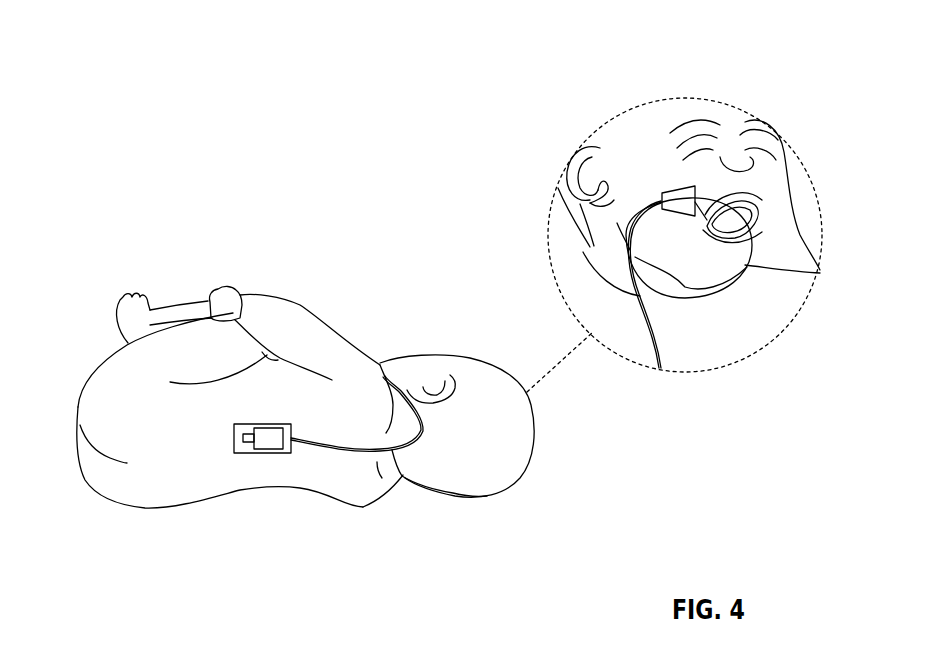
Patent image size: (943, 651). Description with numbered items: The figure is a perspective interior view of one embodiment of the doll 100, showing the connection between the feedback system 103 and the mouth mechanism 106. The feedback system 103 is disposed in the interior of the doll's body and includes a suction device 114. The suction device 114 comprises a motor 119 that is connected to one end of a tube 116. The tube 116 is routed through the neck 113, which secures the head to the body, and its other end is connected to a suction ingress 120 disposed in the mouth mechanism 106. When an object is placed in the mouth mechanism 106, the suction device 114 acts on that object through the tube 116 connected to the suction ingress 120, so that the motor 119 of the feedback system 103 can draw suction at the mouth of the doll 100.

The doll 100 is at (68, 373).
The feedback system 103 is at (276, 491).
The mouth mechanism 106 is at (818, 276).
The neck 113 is at (380, 474).
The suction device 114 is at (303, 493).
The motor 119 is at (275, 455).
The tube 116 is at (423, 432).
The suction ingress 120 is at (678, 185).